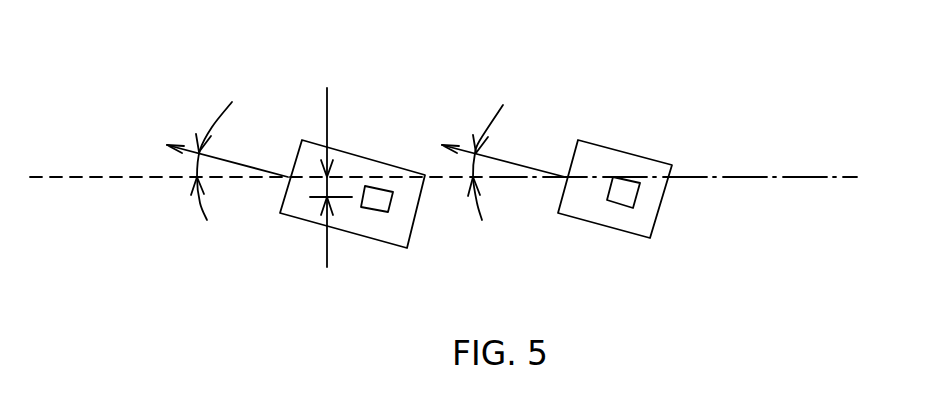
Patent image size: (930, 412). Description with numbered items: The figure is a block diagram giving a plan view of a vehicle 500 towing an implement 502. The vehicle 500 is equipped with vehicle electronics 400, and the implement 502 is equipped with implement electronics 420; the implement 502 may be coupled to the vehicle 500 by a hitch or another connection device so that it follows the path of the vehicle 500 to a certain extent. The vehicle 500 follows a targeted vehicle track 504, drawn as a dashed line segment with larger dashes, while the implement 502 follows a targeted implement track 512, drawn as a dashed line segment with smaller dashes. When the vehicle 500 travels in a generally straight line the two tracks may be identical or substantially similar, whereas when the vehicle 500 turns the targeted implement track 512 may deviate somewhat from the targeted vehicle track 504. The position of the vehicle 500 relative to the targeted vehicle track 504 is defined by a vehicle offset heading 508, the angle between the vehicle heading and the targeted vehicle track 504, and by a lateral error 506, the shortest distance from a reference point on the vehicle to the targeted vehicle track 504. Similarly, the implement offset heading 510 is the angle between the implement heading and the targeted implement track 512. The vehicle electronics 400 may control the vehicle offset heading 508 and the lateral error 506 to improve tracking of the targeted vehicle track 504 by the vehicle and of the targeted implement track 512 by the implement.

The vehicle 500 is at (312, 141).
The vehicle electronics 400 is at (377, 200).
The targeted vehicle track 504 is at (50, 178).
The lateral error 506 is at (327, 184).
The vehicle offset heading 508 is at (193, 163).
The implement 502 is at (614, 148).
The implement electronics 420 is at (620, 190).
The implement offset heading 510 is at (472, 162).
The targeted implement track 512 is at (817, 176).